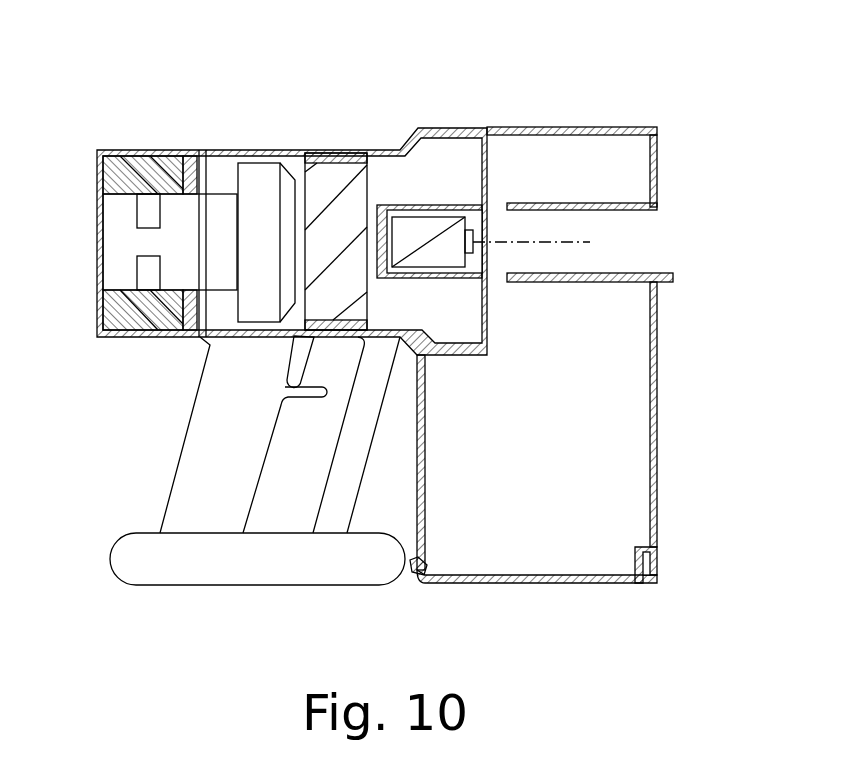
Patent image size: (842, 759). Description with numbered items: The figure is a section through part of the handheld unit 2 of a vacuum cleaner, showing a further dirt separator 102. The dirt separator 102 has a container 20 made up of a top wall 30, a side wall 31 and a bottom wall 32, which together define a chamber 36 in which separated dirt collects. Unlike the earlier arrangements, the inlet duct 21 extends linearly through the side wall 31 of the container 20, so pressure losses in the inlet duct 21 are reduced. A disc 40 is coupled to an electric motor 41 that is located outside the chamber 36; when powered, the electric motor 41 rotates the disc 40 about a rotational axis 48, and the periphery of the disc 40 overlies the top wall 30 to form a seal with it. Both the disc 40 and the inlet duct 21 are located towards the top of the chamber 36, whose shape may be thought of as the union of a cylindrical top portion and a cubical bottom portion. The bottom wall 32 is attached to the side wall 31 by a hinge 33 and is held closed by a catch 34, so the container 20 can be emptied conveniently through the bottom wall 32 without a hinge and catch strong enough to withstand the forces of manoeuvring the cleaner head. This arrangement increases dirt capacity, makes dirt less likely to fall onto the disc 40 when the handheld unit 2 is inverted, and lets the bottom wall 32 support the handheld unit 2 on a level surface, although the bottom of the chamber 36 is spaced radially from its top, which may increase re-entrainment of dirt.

The handheld unit 2 is at (95, 112).
The container 20 is at (581, 346).
The inlet duct 21 is at (598, 203).
The top wall 30 is at (558, 128).
The side wall 31 is at (657, 507).
The bottom wall 32 is at (528, 583).
The hinge 33 is at (657, 557).
The catch 34 is at (412, 568).
The chamber 36 is at (593, 410).
The disc 40 is at (495, 150).
The electric motor 41 is at (433, 228).
The rotational axis 48 is at (595, 243).
The dirt separator 102 is at (660, 142).